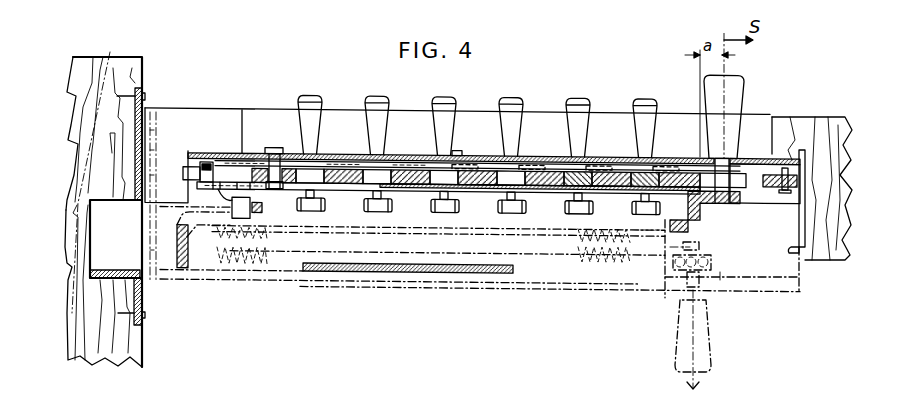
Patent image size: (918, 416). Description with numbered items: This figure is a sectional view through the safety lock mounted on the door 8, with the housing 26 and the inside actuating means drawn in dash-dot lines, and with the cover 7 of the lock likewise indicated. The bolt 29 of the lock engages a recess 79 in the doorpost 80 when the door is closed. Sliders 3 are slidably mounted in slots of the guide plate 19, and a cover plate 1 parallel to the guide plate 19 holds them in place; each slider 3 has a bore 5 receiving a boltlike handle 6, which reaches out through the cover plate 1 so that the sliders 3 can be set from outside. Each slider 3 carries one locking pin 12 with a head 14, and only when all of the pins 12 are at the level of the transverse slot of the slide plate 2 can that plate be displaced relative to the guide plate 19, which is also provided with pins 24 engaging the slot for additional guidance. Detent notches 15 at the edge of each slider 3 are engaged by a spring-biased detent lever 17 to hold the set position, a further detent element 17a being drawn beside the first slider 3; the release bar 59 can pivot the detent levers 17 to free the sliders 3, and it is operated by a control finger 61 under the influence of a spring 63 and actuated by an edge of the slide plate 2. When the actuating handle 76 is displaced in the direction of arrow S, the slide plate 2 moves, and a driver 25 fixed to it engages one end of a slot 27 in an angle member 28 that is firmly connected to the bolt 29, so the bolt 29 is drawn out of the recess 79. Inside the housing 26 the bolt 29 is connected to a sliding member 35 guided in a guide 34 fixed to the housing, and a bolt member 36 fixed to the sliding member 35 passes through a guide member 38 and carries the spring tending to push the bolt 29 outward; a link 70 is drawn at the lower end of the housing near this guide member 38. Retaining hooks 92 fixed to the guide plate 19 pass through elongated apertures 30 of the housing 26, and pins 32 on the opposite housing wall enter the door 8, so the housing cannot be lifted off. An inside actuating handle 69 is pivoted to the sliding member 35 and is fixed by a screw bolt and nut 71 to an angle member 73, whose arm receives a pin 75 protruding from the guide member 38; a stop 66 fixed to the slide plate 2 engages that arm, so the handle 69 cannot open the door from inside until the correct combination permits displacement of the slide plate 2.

The doorpost 80 is at (106, 62).
The recess 79 is at (103, 210).
The bolt 29 is at (125, 243).
The pins 32 is at (157, 117).
The cover 7 is at (252, 133).
The cover plate 1 is at (353, 162).
The bore 5 is at (327, 162).
The sliders 3 is at (420, 158).
The detent notches 15 is at (579, 170).
The slot 17a is at (466, 156).
The detent lever 17 is at (525, 164).
The guide plate 19 is at (693, 176).
The slide plate 2 is at (416, 191).
The boltlike handles 6 is at (368, 103).
The locking pins 12 is at (327, 204).
The head 14 is at (459, 206).
The pins 24 is at (632, 198).
The release bar 59 is at (276, 149).
The spring 63 is at (194, 152).
The control finger 61 is at (221, 191).
The driver 25 is at (262, 208).
The actuating handle 76 is at (737, 91).
The stop 66 is at (677, 228).
The retaining hooks 92 is at (800, 204).
The slot 27 is at (205, 278).
The angle member 28 is at (178, 278).
The bolt member 36 is at (297, 280).
The sliding member 35 is at (525, 283).
The guide 34 is at (400, 274).
The link 70 is at (615, 289).
The housing 26 is at (258, 280).
The guide member 38 is at (596, 286).
The door 8 is at (810, 118).
The elongated apertures 30 is at (795, 246).
The pin 75 is at (693, 248).
The nut 71 is at (712, 263).
The angle member 73 is at (722, 278).
The actuating handle 69 is at (706, 346).